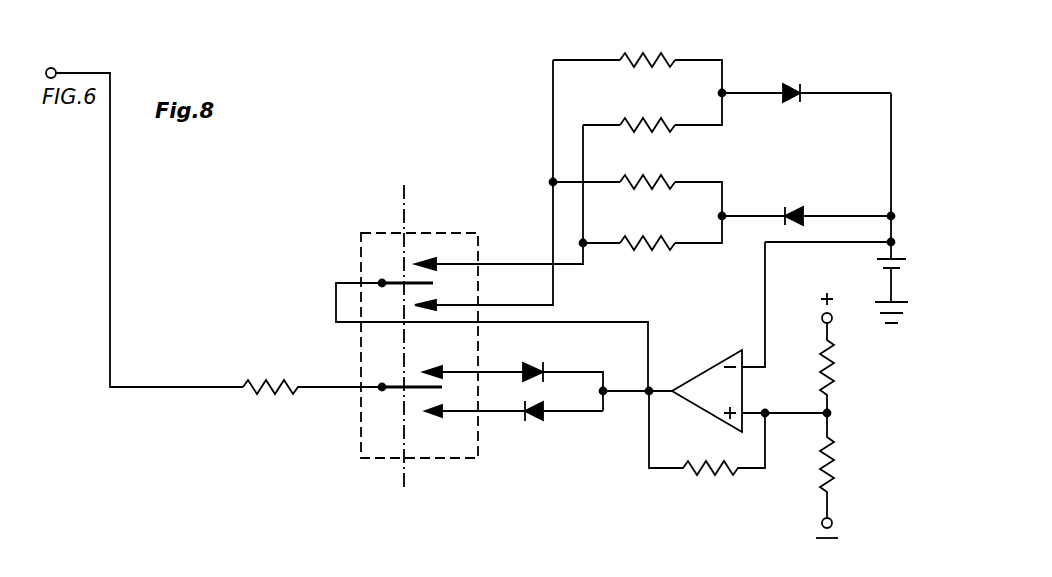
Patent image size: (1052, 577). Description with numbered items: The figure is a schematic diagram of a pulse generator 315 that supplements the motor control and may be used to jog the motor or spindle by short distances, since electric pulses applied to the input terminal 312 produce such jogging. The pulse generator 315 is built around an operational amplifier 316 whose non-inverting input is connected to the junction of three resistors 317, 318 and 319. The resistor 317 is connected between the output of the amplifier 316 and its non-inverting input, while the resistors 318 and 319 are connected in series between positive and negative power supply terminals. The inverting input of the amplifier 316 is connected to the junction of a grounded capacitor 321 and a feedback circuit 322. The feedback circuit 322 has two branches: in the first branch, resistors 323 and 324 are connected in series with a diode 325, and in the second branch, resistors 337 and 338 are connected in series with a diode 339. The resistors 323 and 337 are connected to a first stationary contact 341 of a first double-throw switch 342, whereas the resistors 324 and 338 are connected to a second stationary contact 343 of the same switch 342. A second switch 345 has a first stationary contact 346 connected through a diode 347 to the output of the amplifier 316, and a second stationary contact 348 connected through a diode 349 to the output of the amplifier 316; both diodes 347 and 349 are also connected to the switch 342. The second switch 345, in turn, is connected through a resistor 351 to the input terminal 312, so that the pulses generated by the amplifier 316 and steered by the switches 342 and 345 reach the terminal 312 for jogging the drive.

The input terminal 312 is at (53, 68).
The pulse generator 315 is at (670, 306).
The operational amplifier 316 is at (720, 420).
The resistor 317 is at (712, 482).
The resistor 318 is at (837, 366).
The resistor 319 is at (837, 456).
The grounded capacitor 321 is at (874, 266).
The feedback circuit 322 is at (820, 169).
The resistor 323 is at (641, 57).
The resistor 324 is at (642, 124).
The diode 325 is at (789, 85).
The resistor 337 is at (638, 177).
The resistor 338 is at (630, 239).
The diode 339 is at (792, 212).
The first stationary contact 341 is at (430, 300).
The first double-throw switch 342 is at (388, 250).
The second stationary contact 343 is at (428, 260).
The second switch 345 is at (383, 428).
The first stationary contact 346 is at (436, 413).
The diode 347 is at (535, 418).
The second stationary contact 348 is at (452, 352).
The diode 349 is at (535, 362).
The resistor 351 is at (276, 372).